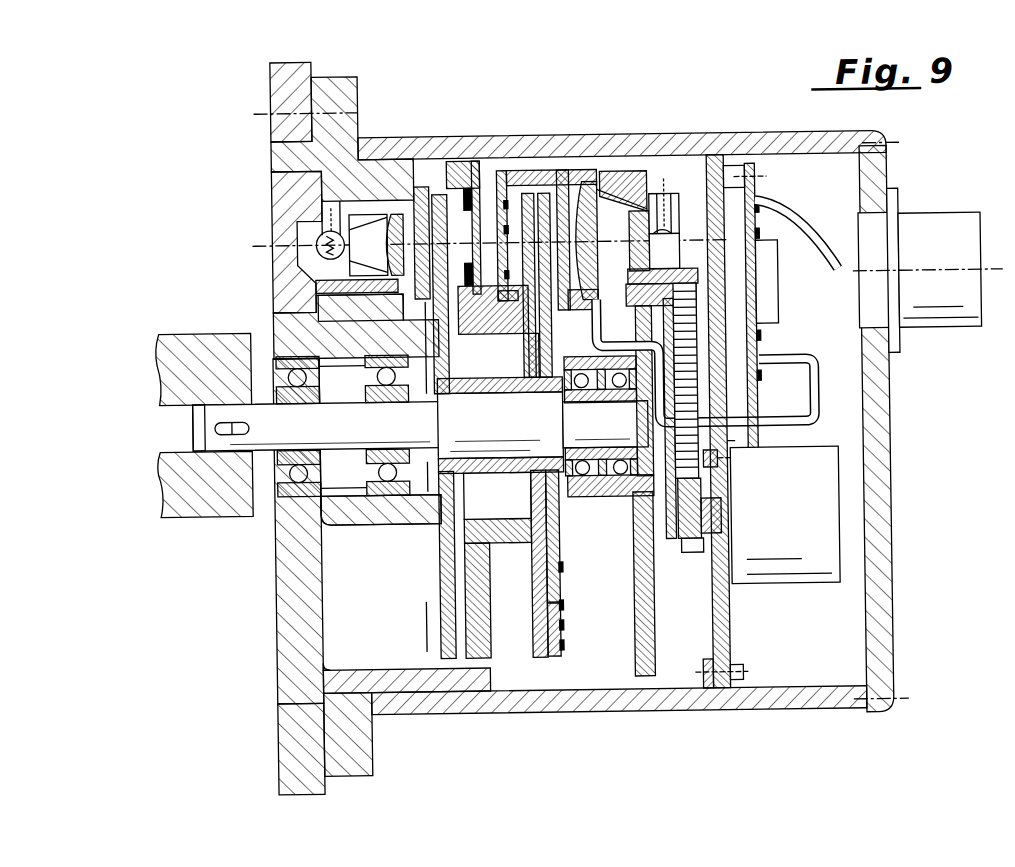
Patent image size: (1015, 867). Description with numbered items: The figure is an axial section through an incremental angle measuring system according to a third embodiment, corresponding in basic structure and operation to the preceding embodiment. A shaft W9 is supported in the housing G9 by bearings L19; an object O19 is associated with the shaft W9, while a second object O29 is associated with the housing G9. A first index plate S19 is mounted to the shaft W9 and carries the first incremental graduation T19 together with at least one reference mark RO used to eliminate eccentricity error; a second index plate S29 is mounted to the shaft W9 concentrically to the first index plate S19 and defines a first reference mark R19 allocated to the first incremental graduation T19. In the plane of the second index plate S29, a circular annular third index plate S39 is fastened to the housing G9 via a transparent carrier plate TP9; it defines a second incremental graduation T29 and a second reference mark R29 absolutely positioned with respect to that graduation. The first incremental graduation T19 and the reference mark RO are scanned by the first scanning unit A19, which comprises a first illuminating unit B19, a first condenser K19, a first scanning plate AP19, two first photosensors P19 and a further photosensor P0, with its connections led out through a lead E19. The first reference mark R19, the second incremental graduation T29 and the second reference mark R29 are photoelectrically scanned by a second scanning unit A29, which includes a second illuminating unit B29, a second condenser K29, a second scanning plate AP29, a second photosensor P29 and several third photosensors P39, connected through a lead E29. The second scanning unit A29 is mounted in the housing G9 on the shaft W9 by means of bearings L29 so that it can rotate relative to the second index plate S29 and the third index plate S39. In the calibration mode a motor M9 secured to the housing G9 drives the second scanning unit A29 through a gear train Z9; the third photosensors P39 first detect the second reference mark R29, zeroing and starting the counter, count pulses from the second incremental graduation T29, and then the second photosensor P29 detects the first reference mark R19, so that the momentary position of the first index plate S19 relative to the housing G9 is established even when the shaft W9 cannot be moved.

The first scanning unit A19 is at (372, 190).
The first condenser K19 is at (404, 208).
The first scanning plate AP19 is at (440, 260).
The first photosensors P19 is at (480, 215).
The third photosensors P39 is at (519, 235).
The second scanning plate AP29 is at (565, 200).
The second condenser K29 is at (582, 240).
The second scanning unit A29 is at (655, 185).
The second illuminating unit B29 is at (682, 230).
The electrical lead of the second scanning unit E29 is at (800, 243).
The electrical lead of the first scanning unit E19 is at (808, 360).
The first illuminating unit B19 is at (320, 242).
The photosensor for reference mark RO P0 is at (361, 314).
The second photosensor P29 is at (560, 360).
The shaft W9 is at (193, 426).
The first object O19 is at (183, 505).
The first bearings L19 is at (283, 498).
The housing G9 is at (300, 617).
The second object O29 is at (375, 736).
The reference mark RO is at (418, 640).
The first index plate S19 is at (470, 655).
The first incremental graduation T19 is at (442, 640).
The transparent carrier plate TP9 is at (540, 657).
The third index plate S39 is at (553, 657).
The second incremental graduation T29 is at (568, 655).
The bearings L29 is at (592, 497).
The second index plate S29 is at (562, 548).
The first reference mark R19 is at (562, 580).
The second reference mark R29 is at (562, 622).
The gear train Z9 is at (679, 567).
The motor M9 is at (788, 579).